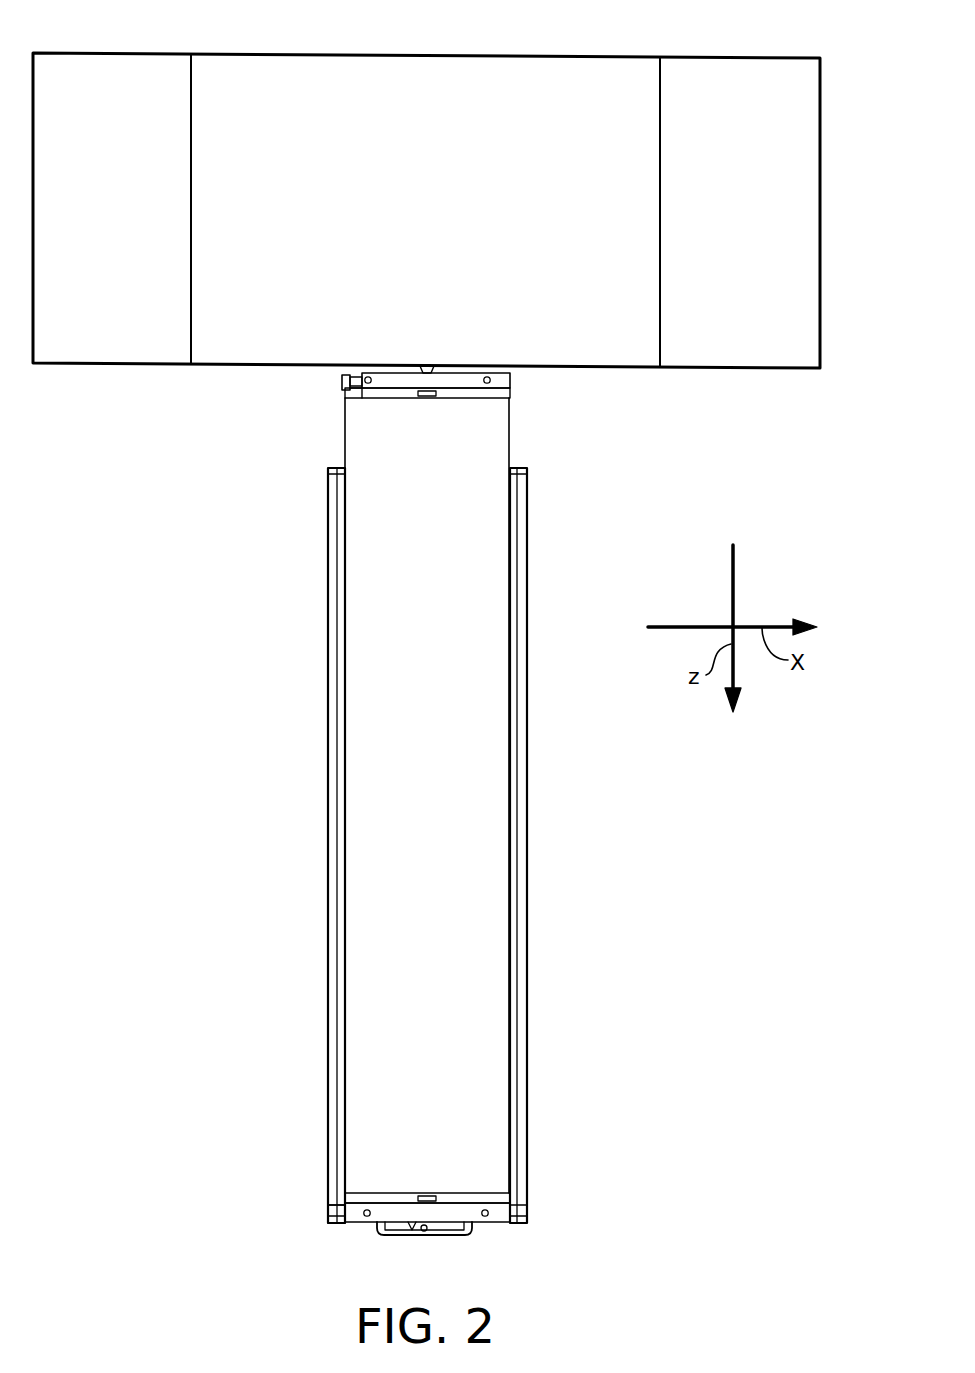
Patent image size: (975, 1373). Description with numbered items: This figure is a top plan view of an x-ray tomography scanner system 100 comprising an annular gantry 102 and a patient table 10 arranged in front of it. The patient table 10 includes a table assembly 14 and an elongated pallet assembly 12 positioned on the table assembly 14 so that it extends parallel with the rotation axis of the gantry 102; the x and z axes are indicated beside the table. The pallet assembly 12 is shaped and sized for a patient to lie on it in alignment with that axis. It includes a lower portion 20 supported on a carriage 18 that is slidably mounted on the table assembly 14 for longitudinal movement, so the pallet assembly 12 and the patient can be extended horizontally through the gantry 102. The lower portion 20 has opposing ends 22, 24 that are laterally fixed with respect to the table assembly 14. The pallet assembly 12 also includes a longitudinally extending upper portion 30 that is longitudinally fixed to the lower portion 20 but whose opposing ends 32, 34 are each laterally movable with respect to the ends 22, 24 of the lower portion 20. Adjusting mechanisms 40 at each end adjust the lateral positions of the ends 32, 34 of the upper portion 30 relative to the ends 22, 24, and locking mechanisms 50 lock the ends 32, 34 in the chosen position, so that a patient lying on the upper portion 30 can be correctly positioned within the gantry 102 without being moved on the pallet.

The annular gantry 102 is at (586, 54).
The x-ray tomography scanner system 100 is at (128, 606).
The patient table 10 is at (560, 921).
The pallet assembly 12 is at (472, 795).
The table assembly 14 is at (528, 716).
The carriage 18 is at (452, 1236).
The lower portion 20 is at (350, 392).
The opposing end of lower portion 22 is at (493, 1211).
The opposing end of lower portion 24 is at (514, 386).
The upper portion 30 is at (373, 1018).
The opposing end of upper portion 32 is at (488, 1133).
The opposing end of upper portion 34 is at (495, 418).
The adjusting mechanism 40 is at (342, 383).
The locking mechanism 50 is at (432, 366).